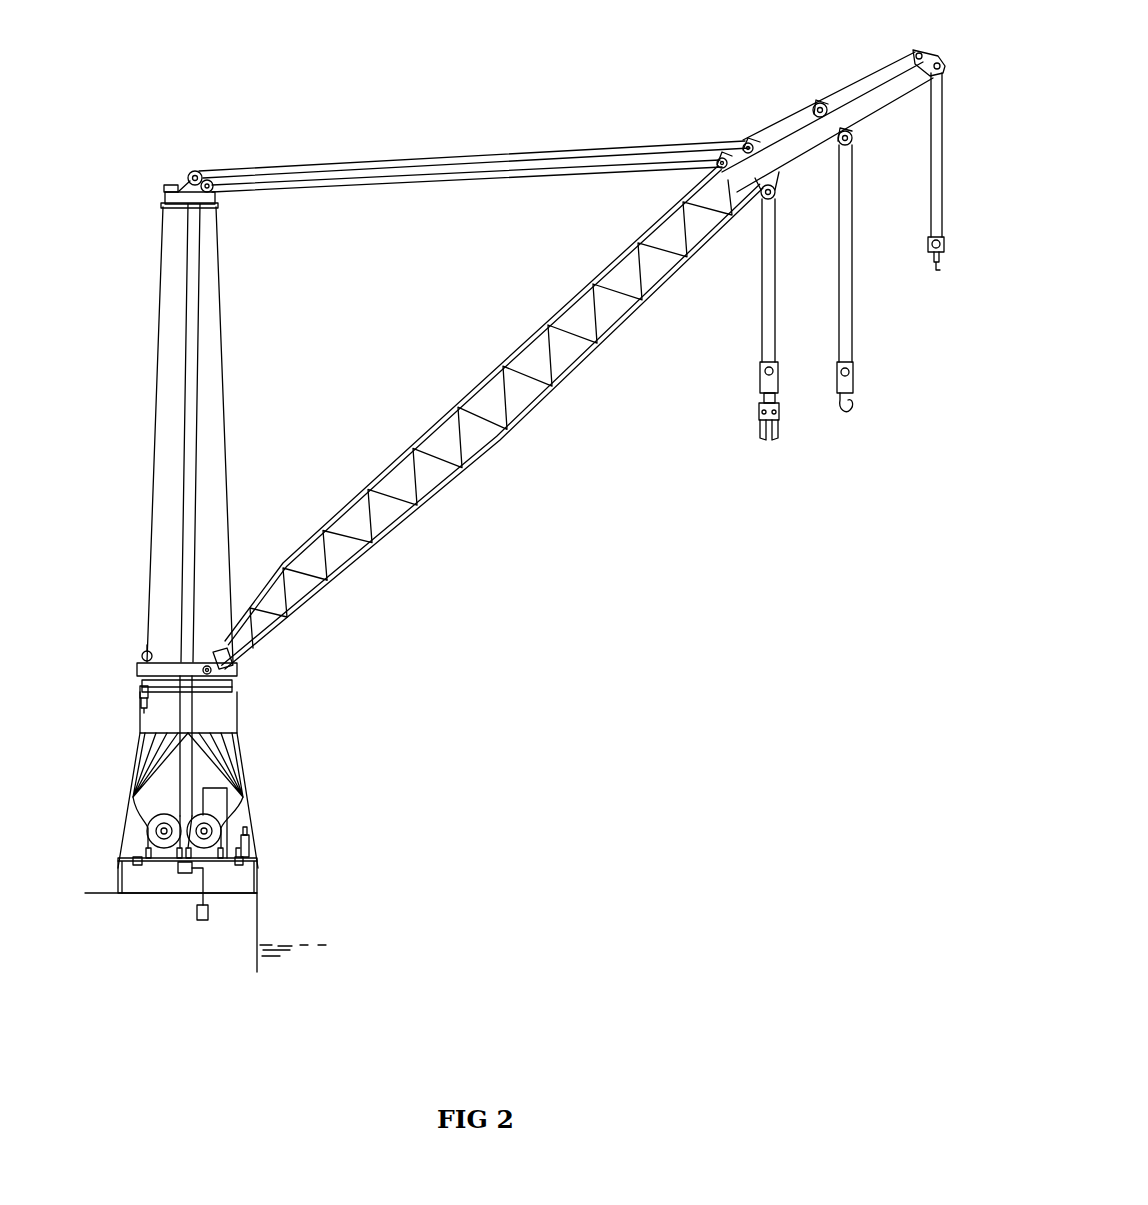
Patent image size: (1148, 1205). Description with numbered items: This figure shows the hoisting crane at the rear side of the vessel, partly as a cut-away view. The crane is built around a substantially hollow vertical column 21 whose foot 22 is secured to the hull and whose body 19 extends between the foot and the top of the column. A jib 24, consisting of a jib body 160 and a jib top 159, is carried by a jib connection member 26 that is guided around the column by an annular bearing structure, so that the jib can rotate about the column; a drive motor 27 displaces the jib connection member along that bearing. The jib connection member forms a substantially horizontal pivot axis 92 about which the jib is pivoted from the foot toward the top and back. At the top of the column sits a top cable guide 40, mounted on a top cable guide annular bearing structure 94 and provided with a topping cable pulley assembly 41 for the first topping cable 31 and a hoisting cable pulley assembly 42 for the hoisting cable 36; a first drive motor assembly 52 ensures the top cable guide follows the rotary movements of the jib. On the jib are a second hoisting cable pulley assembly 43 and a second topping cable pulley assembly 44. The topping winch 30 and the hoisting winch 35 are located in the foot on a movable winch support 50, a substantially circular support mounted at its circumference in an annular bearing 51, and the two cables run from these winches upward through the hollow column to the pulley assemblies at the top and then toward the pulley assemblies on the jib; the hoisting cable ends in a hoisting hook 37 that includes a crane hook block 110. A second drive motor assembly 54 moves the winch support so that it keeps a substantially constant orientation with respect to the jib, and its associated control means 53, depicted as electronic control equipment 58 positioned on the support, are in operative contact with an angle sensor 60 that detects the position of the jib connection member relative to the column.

The body 19 is at (218, 425).
The substantially hollow vertical column 21 is at (118, 480).
The foot 22 is at (249, 815).
The jib 24 is at (437, 340).
The jib connection member 26 is at (240, 673).
The drive motor 27 is at (140, 700).
The topping winch 30 is at (242, 792).
The first topping cable 31 is at (196, 480).
The hoisting winch 35 is at (134, 806).
The hoisting cable 36 is at (181, 570).
The hoisting hook 37 is at (762, 430).
The top cable guide 40 is at (185, 188).
The topping cable pulley assembly 41 is at (208, 180).
The hoisting cable pulley assembly 42 is at (195, 176).
The second hoisting cable pulley assembly 43 is at (746, 142).
The second topping cable pulley assembly 44 is at (718, 160).
The movable winch support 50 is at (150, 865).
The annular bearing 51 is at (240, 865).
The first drive motor assembly 52 is at (165, 188).
The control means 53 is at (203, 920).
The second drive motor assembly 54 is at (250, 843).
The electronic control equipment 58 is at (233, 823).
The angle sensor 60 is at (141, 656).
The substantially horizontal pivot axis 92 is at (204, 665).
The top cable guide annular bearing structure 94 is at (220, 206).
The crane hook block 110 is at (762, 373).
The jib top 159 is at (800, 163).
The jib body 160 is at (432, 515).